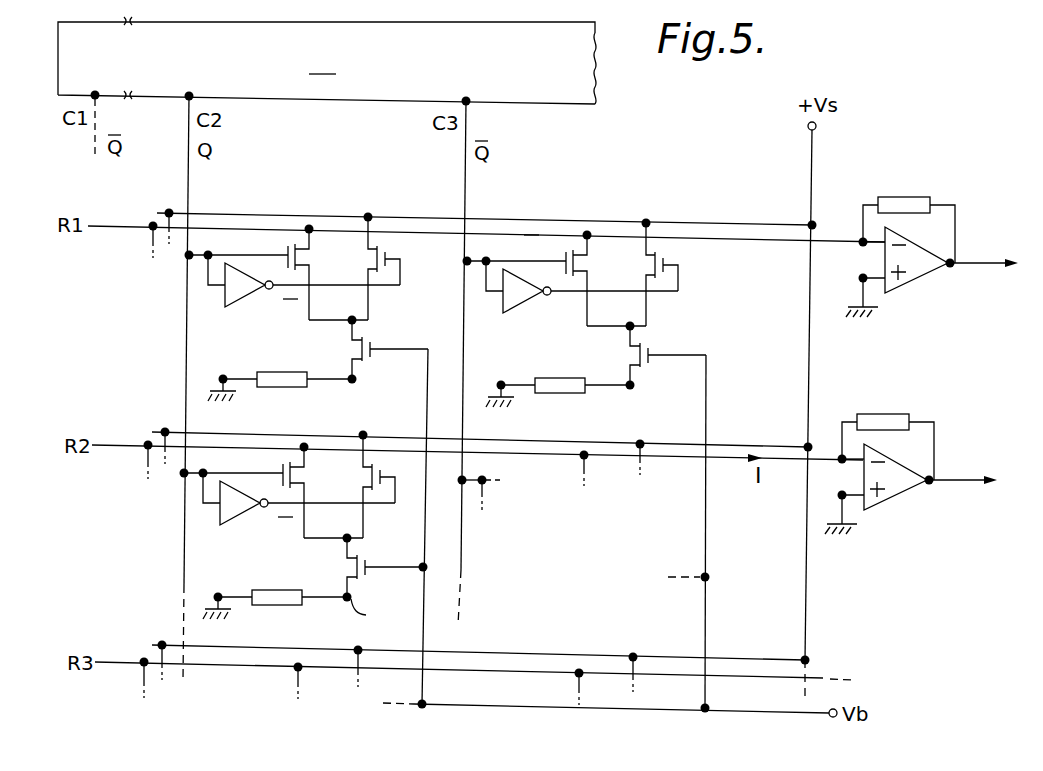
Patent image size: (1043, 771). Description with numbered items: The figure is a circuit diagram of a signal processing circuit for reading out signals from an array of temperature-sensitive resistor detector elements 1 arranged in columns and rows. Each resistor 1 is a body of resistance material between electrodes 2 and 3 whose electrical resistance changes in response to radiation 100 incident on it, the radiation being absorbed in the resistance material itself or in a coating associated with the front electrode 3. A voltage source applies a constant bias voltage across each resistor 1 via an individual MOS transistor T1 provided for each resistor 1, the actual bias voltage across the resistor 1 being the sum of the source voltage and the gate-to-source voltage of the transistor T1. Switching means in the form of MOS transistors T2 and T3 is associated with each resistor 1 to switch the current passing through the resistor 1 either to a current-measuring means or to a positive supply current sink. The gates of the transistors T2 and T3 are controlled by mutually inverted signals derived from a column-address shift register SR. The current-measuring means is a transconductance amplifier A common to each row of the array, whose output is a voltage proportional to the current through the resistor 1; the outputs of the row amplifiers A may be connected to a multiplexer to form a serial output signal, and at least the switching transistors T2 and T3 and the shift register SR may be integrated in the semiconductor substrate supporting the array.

The radiation 100 is at (280, 353).
The temperature-sensitive resistor 1 is at (282, 387).
The electrode 2 is at (324, 383).
The front electrode 3 is at (247, 380).
The MOS transistor T1 is at (526, 474).
The switching MOS transistor T2 is at (453, 382).
The switching MOS transistor T3 is at (534, 376).
The transconductance amplifier A is at (930, 286).
The column-address shift register SR is at (327, 60).